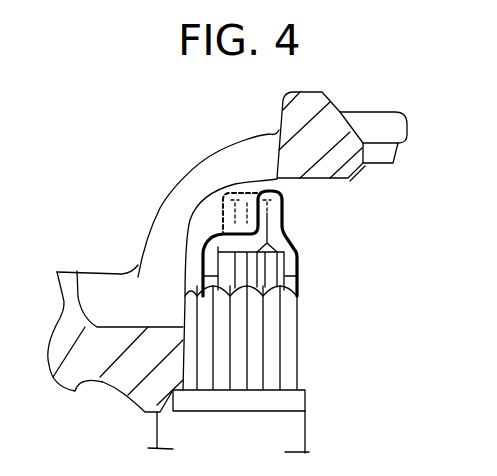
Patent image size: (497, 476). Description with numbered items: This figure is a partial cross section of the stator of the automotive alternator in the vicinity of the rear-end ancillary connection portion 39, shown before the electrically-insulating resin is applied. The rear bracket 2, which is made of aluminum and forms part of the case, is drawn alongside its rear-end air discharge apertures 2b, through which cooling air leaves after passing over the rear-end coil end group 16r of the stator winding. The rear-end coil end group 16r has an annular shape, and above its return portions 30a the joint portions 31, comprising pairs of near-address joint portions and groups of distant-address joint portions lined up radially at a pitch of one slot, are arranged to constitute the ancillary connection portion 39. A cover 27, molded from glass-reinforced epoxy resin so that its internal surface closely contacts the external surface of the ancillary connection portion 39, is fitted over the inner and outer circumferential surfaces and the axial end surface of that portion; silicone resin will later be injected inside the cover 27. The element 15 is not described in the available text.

The rear bracket 2 is at (62, 266).
The rear-end air discharge apertures 2b is at (140, 279).
The base plate 15 is at (157, 428).
The rear-end coil end group 16r is at (306, 354).
The cover 27 is at (287, 229).
The return portions 30a is at (293, 305).
The rear-end ancillary connection portion 39 is at (280, 248).
The joint portions 31 is at (327, 203).